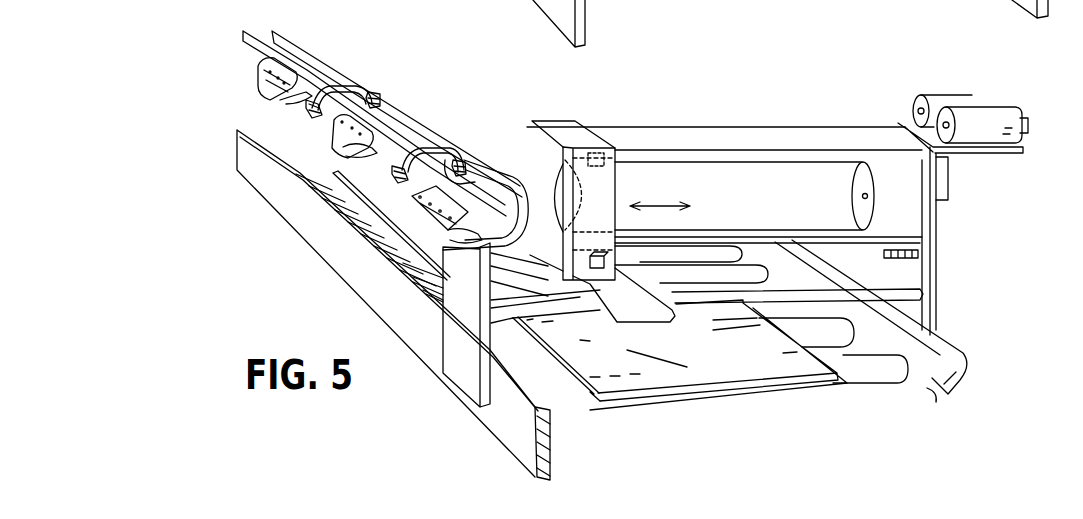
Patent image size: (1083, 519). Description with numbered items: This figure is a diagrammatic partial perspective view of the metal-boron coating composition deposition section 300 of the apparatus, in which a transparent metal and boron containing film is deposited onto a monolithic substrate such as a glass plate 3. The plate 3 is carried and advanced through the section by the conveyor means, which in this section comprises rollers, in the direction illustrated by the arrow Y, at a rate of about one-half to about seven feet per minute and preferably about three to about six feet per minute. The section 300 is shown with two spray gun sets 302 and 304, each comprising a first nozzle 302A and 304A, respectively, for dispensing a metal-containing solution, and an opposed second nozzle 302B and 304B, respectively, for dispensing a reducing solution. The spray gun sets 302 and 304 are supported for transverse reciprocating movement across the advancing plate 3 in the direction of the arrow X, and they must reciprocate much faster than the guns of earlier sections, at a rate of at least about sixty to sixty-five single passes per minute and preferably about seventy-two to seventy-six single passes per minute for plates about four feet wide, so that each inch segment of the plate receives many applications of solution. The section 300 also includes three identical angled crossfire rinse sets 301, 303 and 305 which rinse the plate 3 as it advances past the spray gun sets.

The metal-boron coating composition deposition section 300 is at (338, 33).
The angled crossfire rinse set 301 is at (428, 222).
The spray gun set 302 is at (427, 147).
The first nozzle 302A is at (406, 180).
The second nozzle 302B is at (457, 160).
The angled crossfire rinse set 303 is at (343, 147).
The spray gun set 304 is at (356, 77).
The first nozzle 304A is at (310, 115).
The second nozzle 304B is at (377, 97).
The angled crossfire rinse set 305 is at (258, 88).
The glass plate 3 is at (838, 382).
The direction arrow X is at (660, 196).
The direction arrow Y is at (728, 368).